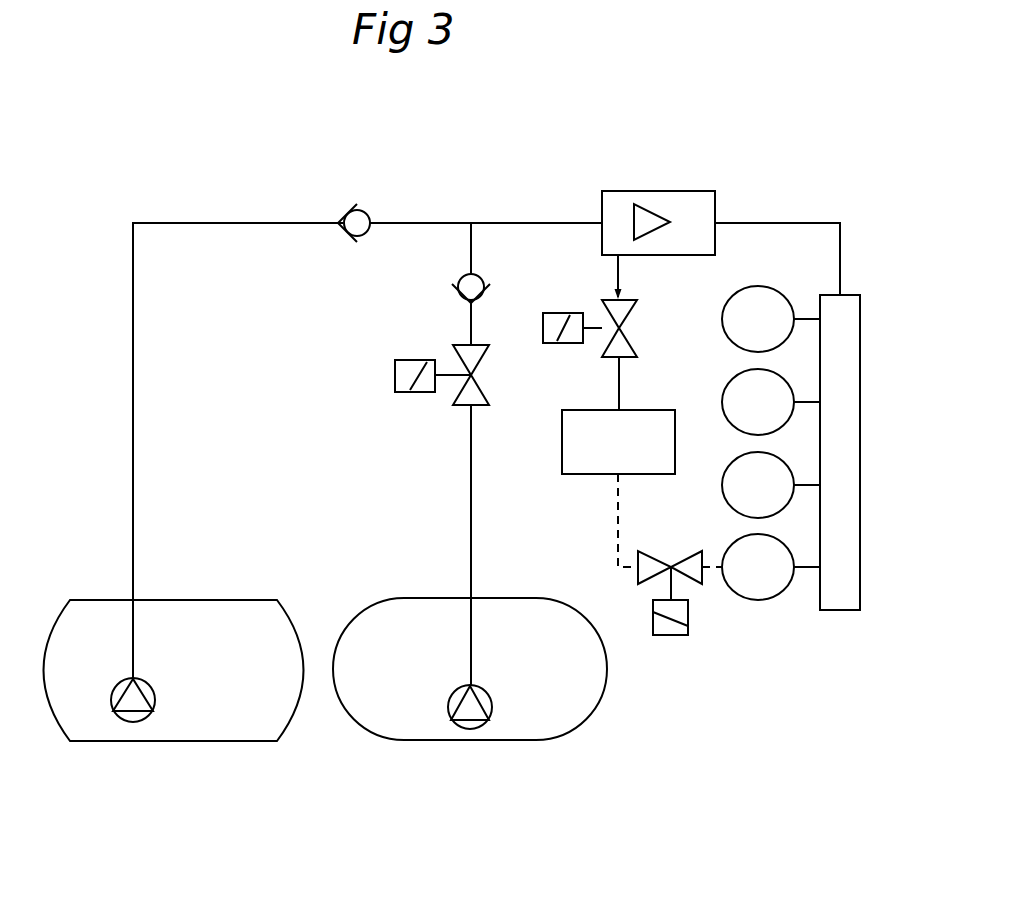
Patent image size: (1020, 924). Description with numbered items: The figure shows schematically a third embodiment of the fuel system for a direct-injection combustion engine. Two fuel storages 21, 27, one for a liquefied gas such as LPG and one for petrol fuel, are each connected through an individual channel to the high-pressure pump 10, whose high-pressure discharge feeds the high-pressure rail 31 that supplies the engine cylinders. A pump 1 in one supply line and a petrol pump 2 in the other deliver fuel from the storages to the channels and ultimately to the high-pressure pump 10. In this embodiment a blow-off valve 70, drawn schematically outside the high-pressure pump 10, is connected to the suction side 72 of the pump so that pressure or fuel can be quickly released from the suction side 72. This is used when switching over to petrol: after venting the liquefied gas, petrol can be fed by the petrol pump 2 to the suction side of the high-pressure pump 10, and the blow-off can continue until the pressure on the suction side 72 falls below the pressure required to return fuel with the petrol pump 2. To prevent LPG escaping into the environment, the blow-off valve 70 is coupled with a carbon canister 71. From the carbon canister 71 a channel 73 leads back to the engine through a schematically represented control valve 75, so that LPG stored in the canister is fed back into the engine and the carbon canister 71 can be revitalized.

The pump 1 is at (480, 712).
The petrol pump 2 is at (137, 722).
The high-pressure pump 10 is at (688, 207).
The fuel storage 21 is at (425, 610).
The fuel storage 27 is at (227, 615).
The high-pressure rail 31 is at (870, 411).
The blow-off valve 70 is at (650, 328).
The carbon canister 71 is at (588, 425).
The suction side 72 is at (591, 211).
The channel 73 is at (618, 512).
The control valve 75 is at (700, 619).